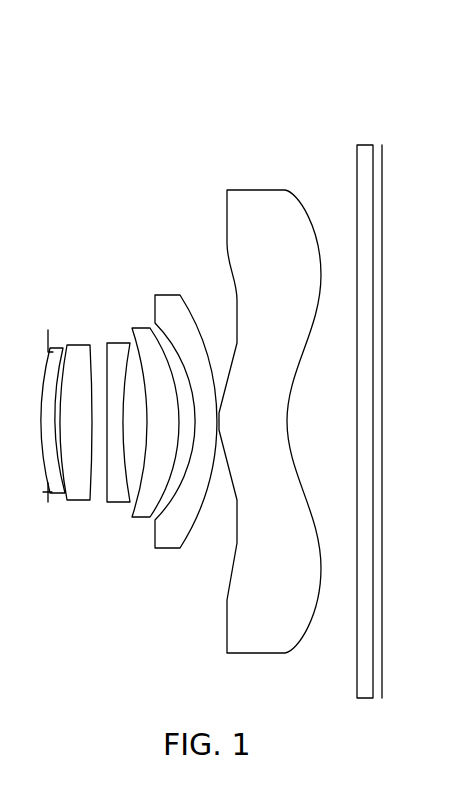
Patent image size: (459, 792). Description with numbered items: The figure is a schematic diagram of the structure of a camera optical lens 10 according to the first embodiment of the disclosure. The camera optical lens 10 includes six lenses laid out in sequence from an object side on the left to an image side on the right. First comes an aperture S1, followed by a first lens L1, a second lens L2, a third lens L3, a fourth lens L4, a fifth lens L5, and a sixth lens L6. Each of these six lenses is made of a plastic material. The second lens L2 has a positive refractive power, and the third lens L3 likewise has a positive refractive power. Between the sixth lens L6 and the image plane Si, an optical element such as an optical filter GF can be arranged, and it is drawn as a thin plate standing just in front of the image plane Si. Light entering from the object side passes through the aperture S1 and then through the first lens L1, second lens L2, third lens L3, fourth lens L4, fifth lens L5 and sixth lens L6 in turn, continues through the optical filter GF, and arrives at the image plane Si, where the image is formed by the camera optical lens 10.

The camera optical lens 10 is at (223, 50).
The aperture S1 is at (36, 416).
The first lens L1 is at (54, 410).
The second lens L2 is at (76, 412).
The third lens L3 is at (117, 411).
The fourth lens L4 is at (155, 413).
The fifth lens L5 is at (186, 409).
The sixth lens L6 is at (270, 407).
The optical filter GF is at (357, 406).
The image plane Si is at (386, 402).